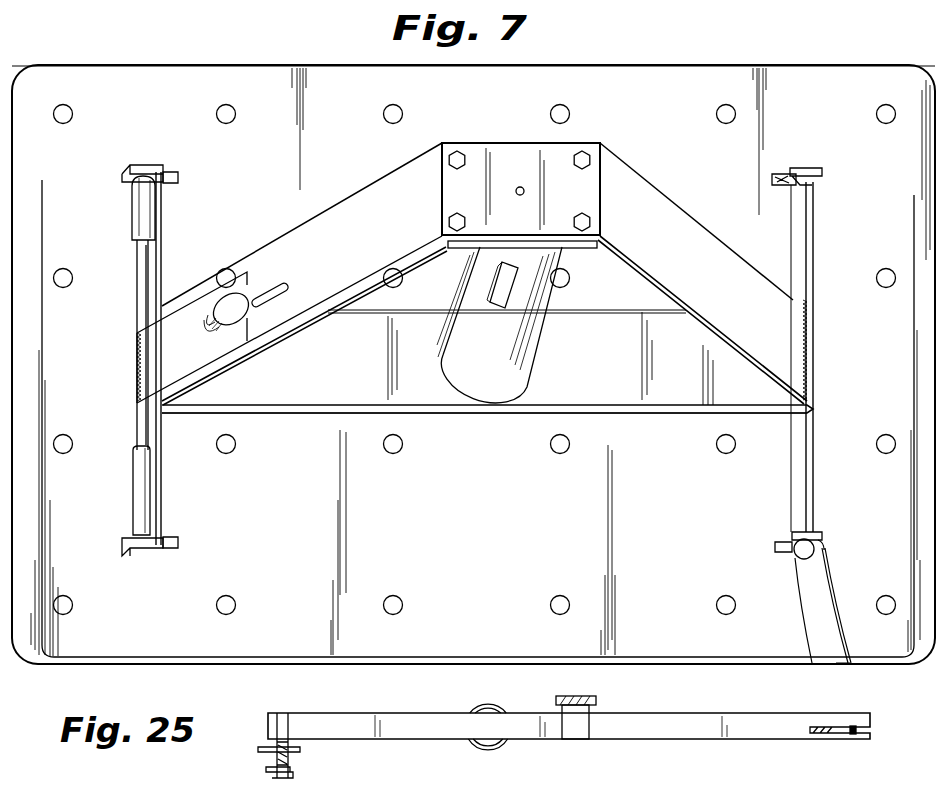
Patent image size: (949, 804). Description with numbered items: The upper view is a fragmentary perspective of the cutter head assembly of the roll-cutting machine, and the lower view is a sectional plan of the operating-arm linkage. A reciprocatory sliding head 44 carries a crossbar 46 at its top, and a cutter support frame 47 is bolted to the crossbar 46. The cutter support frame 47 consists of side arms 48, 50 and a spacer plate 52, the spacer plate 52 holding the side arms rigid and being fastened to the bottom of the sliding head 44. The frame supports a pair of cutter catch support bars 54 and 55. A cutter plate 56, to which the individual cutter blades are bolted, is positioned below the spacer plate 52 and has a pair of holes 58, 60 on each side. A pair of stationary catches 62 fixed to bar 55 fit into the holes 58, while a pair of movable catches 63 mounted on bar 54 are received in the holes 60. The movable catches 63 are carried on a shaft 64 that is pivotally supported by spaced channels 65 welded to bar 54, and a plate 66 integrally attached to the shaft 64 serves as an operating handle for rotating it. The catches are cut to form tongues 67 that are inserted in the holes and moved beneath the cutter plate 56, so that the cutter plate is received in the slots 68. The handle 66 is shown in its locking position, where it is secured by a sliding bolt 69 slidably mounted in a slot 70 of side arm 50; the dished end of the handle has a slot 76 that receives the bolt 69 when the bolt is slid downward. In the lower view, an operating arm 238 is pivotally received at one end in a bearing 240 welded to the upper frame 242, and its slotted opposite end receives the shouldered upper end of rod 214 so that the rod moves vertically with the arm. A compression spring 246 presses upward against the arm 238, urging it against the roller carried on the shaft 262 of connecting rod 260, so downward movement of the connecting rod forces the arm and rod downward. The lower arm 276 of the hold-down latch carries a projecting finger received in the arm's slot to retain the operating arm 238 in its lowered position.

In FIG. 7, the sliding head 44 is at (532, 344).
In FIG. 7, the crossbar 46 is at (588, 250).
In FIG. 7, the cutter support frame 47 is at (350, 215).
In FIG. 7, the side arm 48 is at (694, 255).
In FIG. 7, the side arm 50 is at (366, 259).
In FIG. 7, the spacer plate 52 is at (330, 405).
In FIG. 7, the cutter catch support bar 54 is at (166, 268).
In FIG. 7, the cutter catch support bar 55 is at (790, 216).
In FIG. 7, the cutter plate 56 is at (312, 658).
In FIG. 7, the holes 58 is at (770, 180).
In FIG. 7, the holes 60 is at (180, 180).
In FIG. 7, the stationary catches 62 is at (790, 533).
In FIG. 7, the movable catches 63 is at (128, 170).
In FIG. 7, the shaft 64 is at (136, 297).
In FIG. 7, the spaced channels 65 is at (136, 215).
In FIG. 7, the plate 66 is at (140, 368).
In FIG. 7, the tongues 67 is at (800, 170).
In FIG. 7, the slots 68 is at (826, 548).
In FIG. 7, the sliding bolt 69 is at (249, 291).
In FIG. 7, the slot 70 is at (286, 291).
In FIG. 7, the slot 76 is at (562, 600).
In FIG. 25, the operating arm 238 is at (381, 713).
In FIG. 25, the bearing 240 is at (272, 752).
In FIG. 25, the upper frame 242 is at (297, 752).
In FIG. 25, the compression spring 246 is at (508, 703).
In FIG. 25, the connecting rod 260 is at (592, 698).
In FIG. 25, the shaft 262 is at (590, 722).
In FIG. 25, the lower arm 276 is at (823, 727).
In FIG. 25, the rod 214 is at (857, 725).